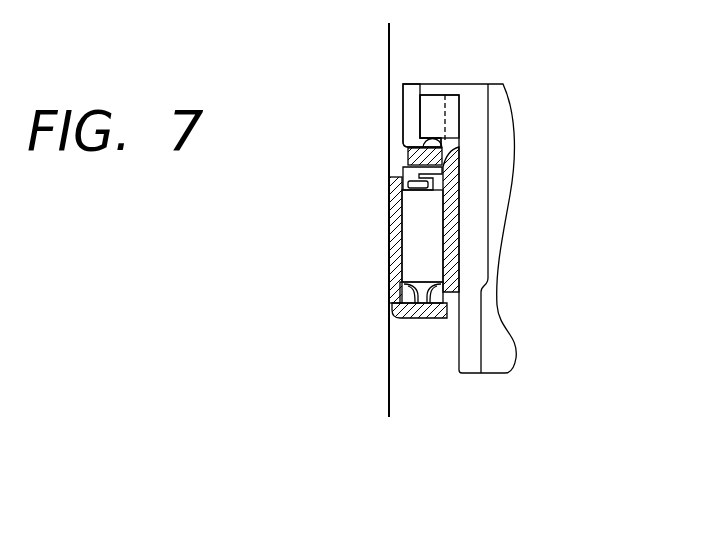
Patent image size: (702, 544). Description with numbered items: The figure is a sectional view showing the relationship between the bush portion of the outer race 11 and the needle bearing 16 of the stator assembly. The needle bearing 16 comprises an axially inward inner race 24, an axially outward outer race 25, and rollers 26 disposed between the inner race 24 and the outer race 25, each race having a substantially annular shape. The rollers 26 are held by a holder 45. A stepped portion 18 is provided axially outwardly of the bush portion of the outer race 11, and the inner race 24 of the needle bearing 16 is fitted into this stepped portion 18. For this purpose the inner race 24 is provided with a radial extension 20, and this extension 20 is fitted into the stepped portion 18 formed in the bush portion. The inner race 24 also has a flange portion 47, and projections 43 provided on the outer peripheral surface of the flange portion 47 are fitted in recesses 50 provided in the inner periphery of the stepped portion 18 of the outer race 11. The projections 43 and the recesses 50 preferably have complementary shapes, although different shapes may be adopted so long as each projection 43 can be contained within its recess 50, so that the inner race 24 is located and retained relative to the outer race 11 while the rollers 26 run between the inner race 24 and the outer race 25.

The outer race 11 is at (506, 105).
The needle bearing 16 is at (386, 306).
The stepped portion 18 is at (402, 108).
The radial extension 20 is at (432, 92).
The inner race 24 is at (456, 233).
The outer race 25 is at (390, 213).
The rollers 26 is at (415, 251).
The projection 43 is at (447, 128).
The holder 45 is at (408, 318).
The flange portion 47 is at (405, 168).
The recess 50 is at (405, 134).